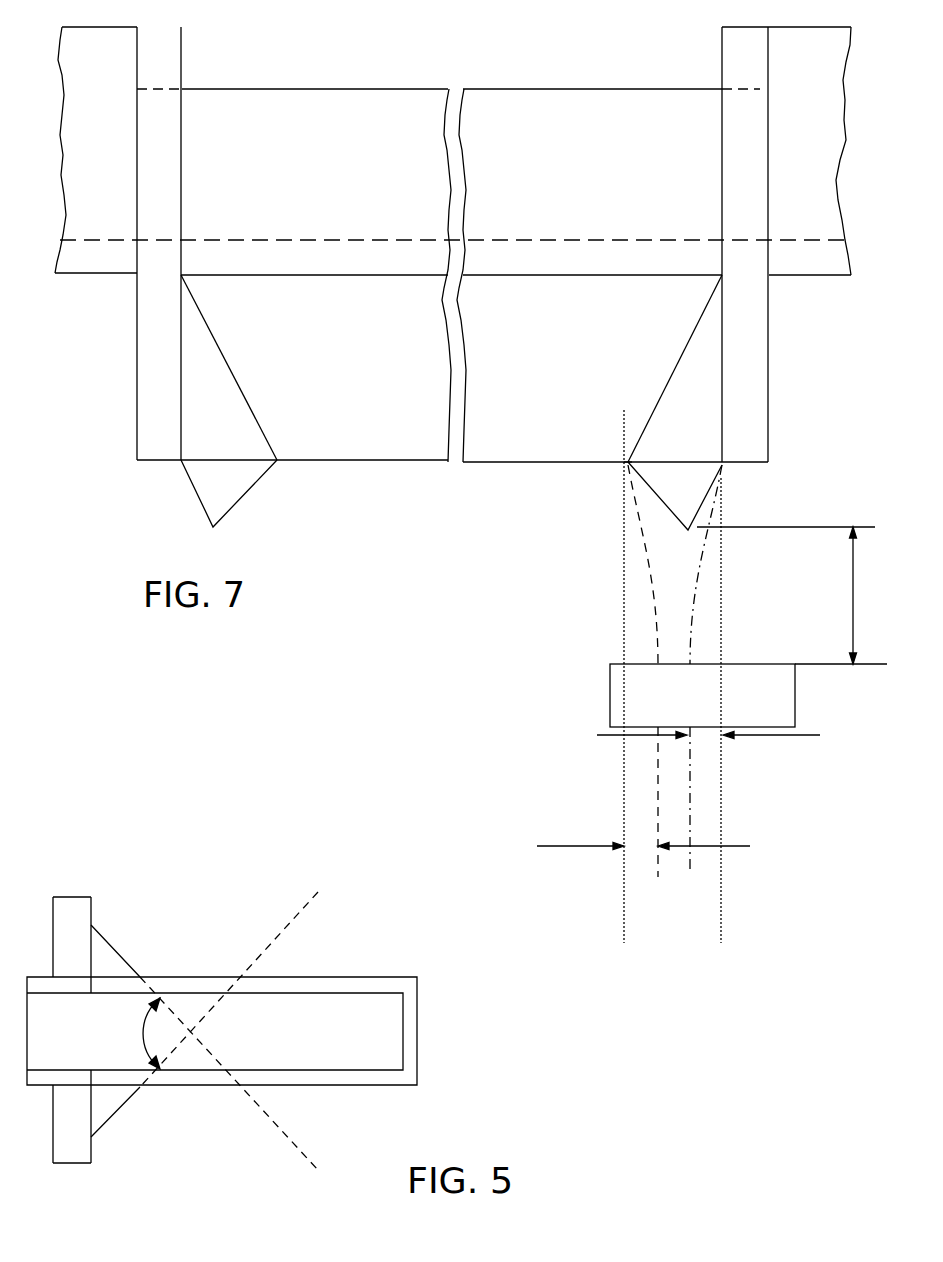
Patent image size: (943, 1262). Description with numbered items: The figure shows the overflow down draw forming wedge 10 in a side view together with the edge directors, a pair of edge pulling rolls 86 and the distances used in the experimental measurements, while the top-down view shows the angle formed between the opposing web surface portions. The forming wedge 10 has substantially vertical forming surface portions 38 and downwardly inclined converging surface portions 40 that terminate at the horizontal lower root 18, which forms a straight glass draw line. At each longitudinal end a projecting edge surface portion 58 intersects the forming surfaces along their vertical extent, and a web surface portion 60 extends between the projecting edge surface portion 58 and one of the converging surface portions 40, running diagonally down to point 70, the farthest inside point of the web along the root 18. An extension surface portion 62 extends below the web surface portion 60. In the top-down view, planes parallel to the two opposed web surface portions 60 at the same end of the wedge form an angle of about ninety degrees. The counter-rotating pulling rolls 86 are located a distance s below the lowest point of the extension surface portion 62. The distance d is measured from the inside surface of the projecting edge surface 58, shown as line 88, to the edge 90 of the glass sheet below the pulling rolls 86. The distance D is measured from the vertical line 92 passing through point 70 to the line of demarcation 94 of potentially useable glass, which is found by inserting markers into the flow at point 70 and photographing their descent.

In FIG. 5, the forming wedge 10 is at (347, 977).
In FIG. 7, the root 18 is at (363, 458).
In FIG. 7, the vertical forming surface portions 38 is at (515, 107).
In FIG. 7, the downwardly inclined converging surface portions 40 is at (380, 420).
In FIG. 7, the projecting edge surface portion 58 is at (721, 57).
In FIG. 5, the projecting edge surface portion 58 is at (72, 895).
In FIG. 7, the web surface portion 60 is at (687, 340).
In FIG. 5, the web surface portion 60 is at (117, 943).
In FIG. 7, the extension surface portion 62 is at (653, 495).
In FIG. 7, the point 70 is at (625, 461).
In FIG. 7, the block 86 is at (610, 675).
In FIG. 7, the line 88 is at (727, 817).
In FIG. 7, the edge of the glass sheet 90 is at (688, 858).
In FIG. 7, the vertical line 92 is at (623, 937).
In FIG. 7, the line of demarcation 94 is at (653, 582).
In FIG. 7, the distance s is at (853, 574).
In FIG. 7, the distance d is at (617, 738).
In FIG. 7, the distance D is at (553, 843).